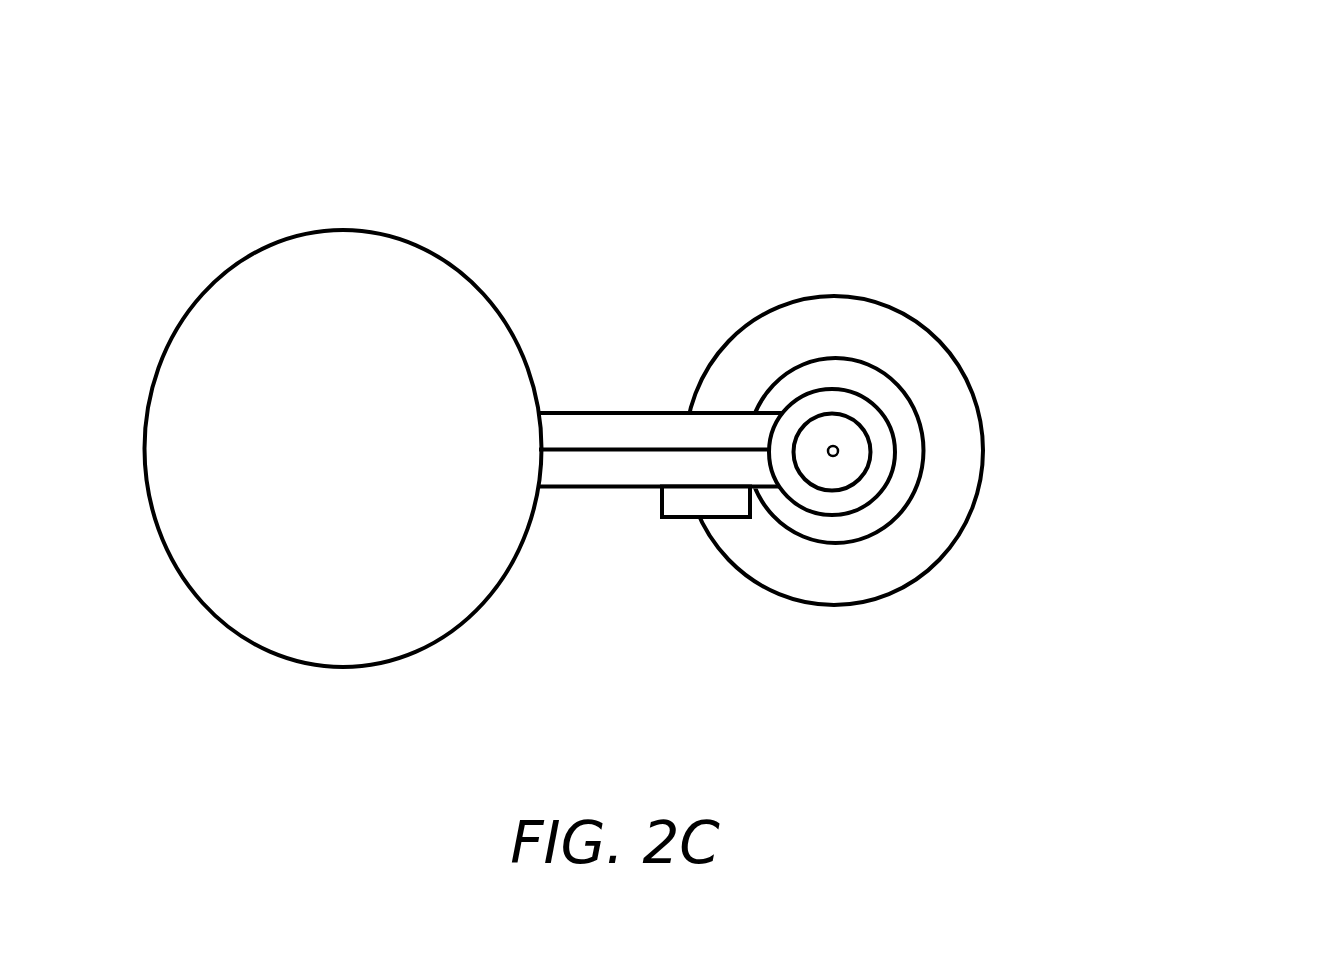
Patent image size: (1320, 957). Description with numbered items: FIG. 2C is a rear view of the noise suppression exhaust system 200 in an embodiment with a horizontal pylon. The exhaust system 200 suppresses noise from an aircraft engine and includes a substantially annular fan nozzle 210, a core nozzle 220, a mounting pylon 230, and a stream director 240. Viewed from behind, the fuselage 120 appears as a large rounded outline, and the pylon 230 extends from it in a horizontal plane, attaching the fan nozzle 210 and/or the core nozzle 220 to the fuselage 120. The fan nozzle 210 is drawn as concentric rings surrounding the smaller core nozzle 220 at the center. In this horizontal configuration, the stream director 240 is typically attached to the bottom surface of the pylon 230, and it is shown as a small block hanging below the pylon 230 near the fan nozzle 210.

The exhaust system 200 is at (1155, 103).
The fuselage 120 is at (343, 448).
The fan nozzle 210 is at (920, 320).
The core nozzle 220 is at (880, 437).
The mounting pylon 230 is at (606, 428).
The stream director 240 is at (682, 507).